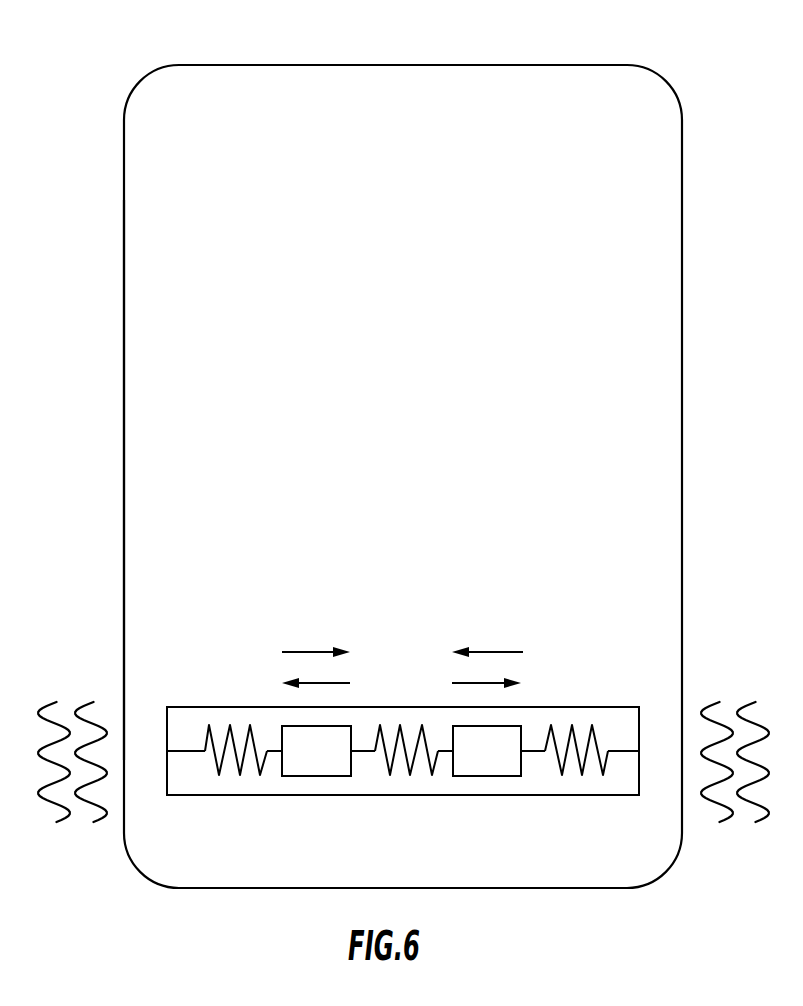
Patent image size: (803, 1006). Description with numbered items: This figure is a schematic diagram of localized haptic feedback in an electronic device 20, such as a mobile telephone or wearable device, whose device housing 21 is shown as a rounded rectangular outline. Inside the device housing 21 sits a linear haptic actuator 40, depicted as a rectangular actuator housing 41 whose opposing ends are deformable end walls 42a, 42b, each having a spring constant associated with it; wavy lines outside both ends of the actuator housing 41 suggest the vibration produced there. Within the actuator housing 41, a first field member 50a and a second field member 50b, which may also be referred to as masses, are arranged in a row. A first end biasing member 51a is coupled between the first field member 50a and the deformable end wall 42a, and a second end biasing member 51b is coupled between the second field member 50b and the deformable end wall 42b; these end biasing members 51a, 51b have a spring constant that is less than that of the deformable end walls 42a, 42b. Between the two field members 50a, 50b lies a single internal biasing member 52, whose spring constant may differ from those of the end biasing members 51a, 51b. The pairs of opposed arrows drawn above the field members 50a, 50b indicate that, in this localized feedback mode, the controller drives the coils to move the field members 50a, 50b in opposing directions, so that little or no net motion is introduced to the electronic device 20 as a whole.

The electronic device 20 is at (92, 112).
The device housing 21 is at (124, 310).
The linear haptic actuator 40 is at (606, 700).
The actuator housing 41 is at (347, 796).
The deformable end wall 42a is at (167, 775).
The deformable end wall 42b is at (641, 733).
The field member 50a is at (317, 777).
The field member 50b is at (486, 777).
The end biasing member 51a is at (240, 777).
The end biasing member 51b is at (581, 777).
The internal biasing member 52 is at (410, 777).